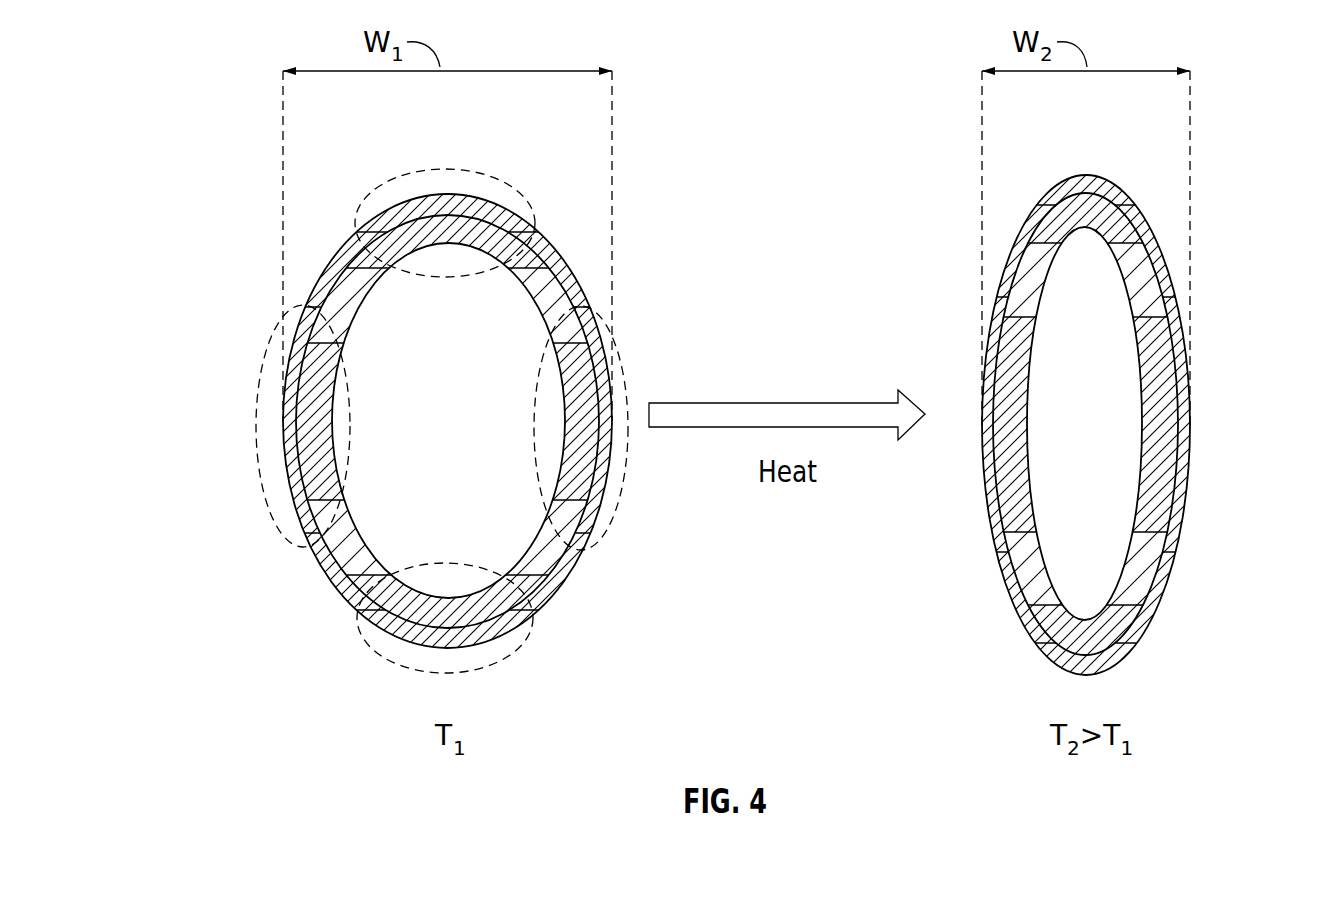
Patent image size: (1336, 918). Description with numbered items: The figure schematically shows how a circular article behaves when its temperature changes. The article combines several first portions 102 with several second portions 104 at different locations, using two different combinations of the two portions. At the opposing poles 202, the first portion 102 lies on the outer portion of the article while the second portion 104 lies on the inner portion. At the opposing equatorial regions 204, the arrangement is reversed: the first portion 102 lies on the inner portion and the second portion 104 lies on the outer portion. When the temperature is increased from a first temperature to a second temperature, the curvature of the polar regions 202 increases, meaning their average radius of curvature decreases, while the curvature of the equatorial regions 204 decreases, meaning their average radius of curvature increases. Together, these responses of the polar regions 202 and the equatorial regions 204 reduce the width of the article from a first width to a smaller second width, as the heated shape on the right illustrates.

The first portion 102 is at (480, 205).
The second portion 104 is at (450, 238).
The opposing poles 202 is at (377, 188).
The opposing equatorial regions 204 is at (278, 323).